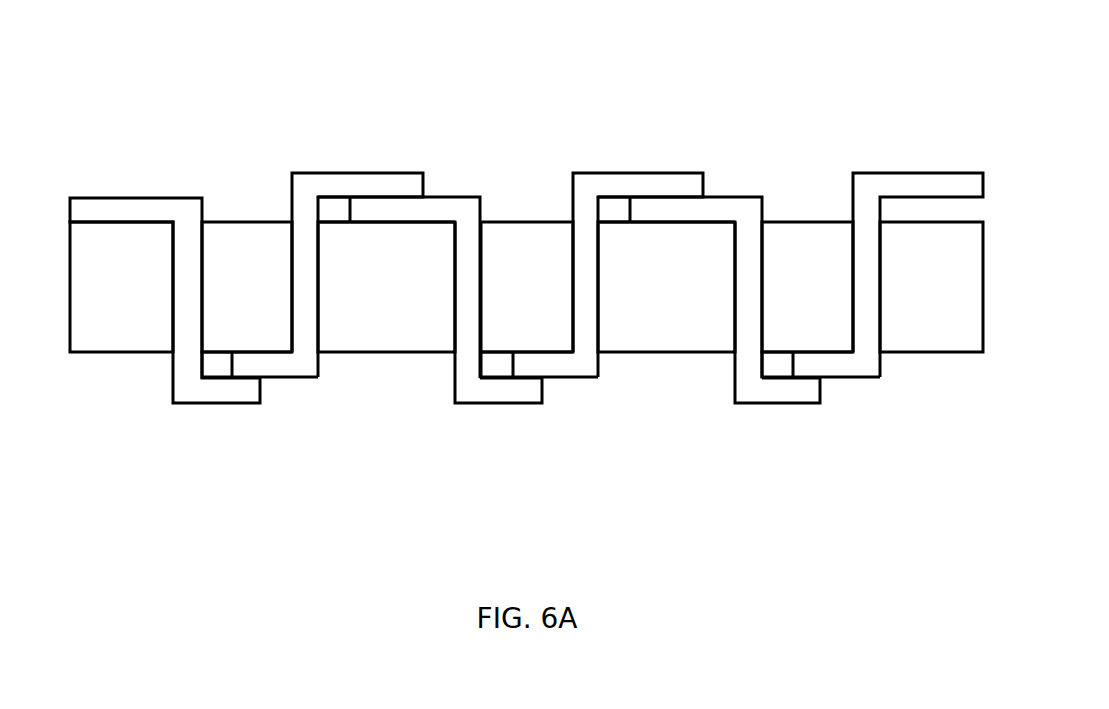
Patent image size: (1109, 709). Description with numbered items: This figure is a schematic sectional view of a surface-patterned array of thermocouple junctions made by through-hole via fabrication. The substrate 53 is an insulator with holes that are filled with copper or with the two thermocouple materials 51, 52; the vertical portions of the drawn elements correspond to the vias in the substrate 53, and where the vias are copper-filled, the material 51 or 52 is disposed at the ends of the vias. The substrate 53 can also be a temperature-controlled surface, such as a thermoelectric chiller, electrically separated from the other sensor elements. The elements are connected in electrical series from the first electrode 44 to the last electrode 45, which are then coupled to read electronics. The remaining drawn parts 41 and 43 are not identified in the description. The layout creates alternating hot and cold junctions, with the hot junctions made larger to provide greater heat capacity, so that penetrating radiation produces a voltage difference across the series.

The lower electrode 41 is at (263, 380).
The upper electrode 43 is at (667, 197).
The first electrode 44 is at (93, 197).
The last electrode 45 is at (917, 172).
The first thermocouple material 51 is at (760, 403).
The second thermocouple material 52 is at (853, 174).
The substrate 53 is at (398, 302).